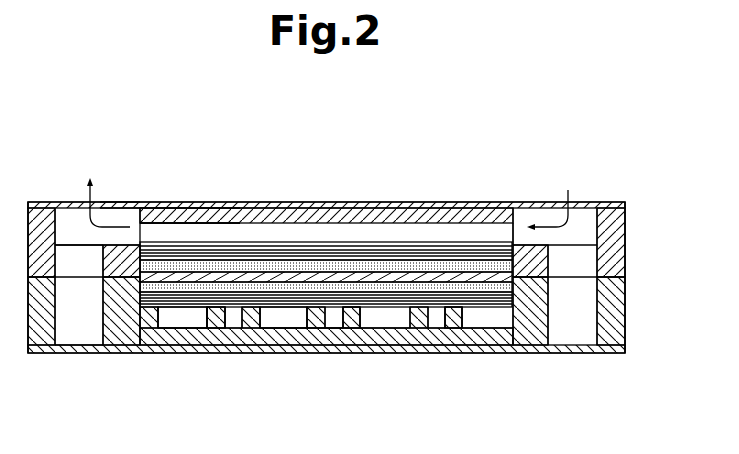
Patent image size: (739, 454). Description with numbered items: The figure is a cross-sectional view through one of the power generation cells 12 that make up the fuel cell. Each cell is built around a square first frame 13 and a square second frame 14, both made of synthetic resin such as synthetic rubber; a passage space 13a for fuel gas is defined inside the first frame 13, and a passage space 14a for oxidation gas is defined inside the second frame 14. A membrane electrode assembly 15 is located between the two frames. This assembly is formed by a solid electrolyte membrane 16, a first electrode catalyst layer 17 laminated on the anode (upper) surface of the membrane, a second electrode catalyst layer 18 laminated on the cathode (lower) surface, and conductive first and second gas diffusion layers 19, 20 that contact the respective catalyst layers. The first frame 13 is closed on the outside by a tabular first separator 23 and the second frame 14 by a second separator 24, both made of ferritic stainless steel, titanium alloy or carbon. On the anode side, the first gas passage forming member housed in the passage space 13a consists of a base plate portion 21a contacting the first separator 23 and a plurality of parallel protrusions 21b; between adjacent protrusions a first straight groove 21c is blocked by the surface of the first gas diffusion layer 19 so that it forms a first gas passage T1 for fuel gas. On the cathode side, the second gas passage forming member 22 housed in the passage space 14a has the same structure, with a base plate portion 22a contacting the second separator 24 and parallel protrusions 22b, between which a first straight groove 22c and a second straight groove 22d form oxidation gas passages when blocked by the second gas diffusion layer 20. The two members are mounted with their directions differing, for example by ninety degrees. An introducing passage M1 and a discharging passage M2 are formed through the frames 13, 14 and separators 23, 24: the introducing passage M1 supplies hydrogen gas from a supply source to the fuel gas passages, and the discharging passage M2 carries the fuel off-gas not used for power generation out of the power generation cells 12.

The power generation cell 12 is at (526, 184).
The first frame 13 is at (630, 247).
The passage space of fuel gas 13a is at (478, 241).
The second frame 14 is at (630, 313).
The passage space of oxidation gas 14a is at (500, 324).
The membrane electrode assembly 15 is at (354, 265).
The solid electrolyte membrane 16 is at (323, 278).
The first electrode catalyst layer 17 is at (411, 267).
The second electrode catalyst layer 18 is at (383, 312).
The first gas diffusion layer 19 is at (444, 240).
The second gas diffusion layer 20 is at (418, 336).
The base plate portion 21a is at (278, 218).
The protrusions 21b is at (185, 230).
The first straight groove 21c is at (190, 175).
The second gas passage forming member 22 is at (268, 332).
The base plate portion 22a is at (326, 335).
The protrusions 22b is at (360, 338).
The first straight groove 22c is at (214, 322).
The second straight groove 22d is at (183, 322).
The first separator 23 is at (139, 202).
The second separator 24 is at (120, 350).
The first gas passage T1 is at (231, 232).
The introducing passage M1 is at (583, 228).
The discharging passage M2 is at (70, 232).